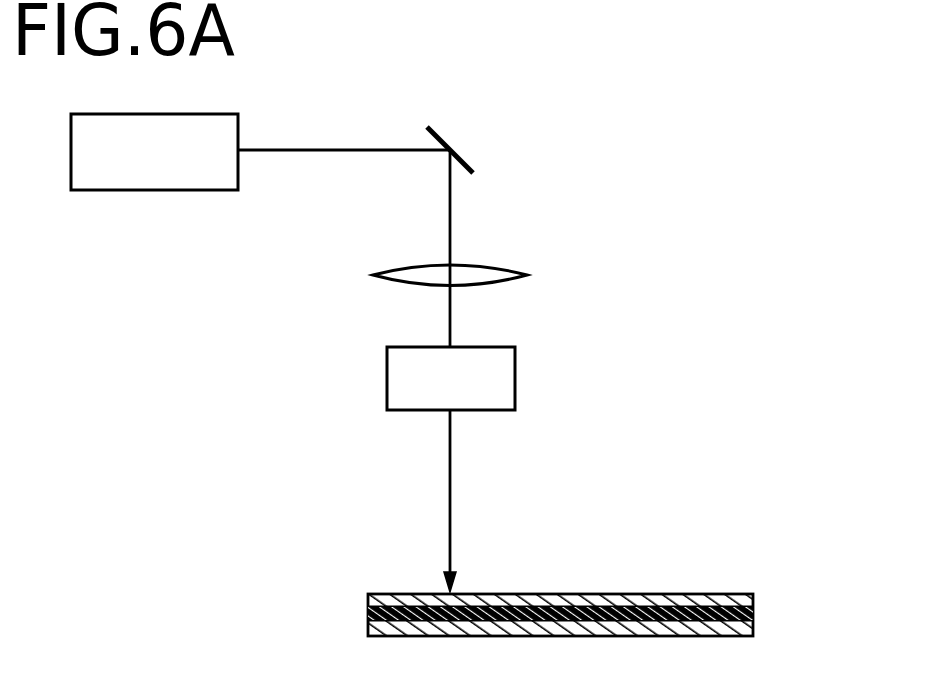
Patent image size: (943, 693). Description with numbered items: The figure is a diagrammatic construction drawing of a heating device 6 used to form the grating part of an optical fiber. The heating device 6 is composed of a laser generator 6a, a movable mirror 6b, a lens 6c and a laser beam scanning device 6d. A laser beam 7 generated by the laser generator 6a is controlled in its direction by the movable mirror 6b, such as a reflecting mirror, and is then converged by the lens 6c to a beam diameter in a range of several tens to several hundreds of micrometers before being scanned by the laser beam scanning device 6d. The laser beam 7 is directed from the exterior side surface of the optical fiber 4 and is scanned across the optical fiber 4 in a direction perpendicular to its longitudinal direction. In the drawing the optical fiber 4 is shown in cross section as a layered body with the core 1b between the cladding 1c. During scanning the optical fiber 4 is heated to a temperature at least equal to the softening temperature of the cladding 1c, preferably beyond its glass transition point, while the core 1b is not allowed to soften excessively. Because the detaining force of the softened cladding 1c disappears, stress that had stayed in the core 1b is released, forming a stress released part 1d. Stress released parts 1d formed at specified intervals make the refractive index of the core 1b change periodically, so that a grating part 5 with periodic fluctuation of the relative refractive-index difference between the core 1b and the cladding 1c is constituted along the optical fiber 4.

The core 1b is at (663, 606).
The cladding 1c is at (736, 595).
The stress released part 1d is at (440, 593).
The optical fiber 4 is at (587, 606).
The grating part 5 is at (617, 647).
The heating device 6 is at (460, 108).
The laser generator 6a is at (232, 134).
The movable mirror 6b is at (465, 166).
The lens 6c is at (516, 273).
The laser beam scanning device 6d is at (505, 383).
The laser beam 7 is at (454, 521).